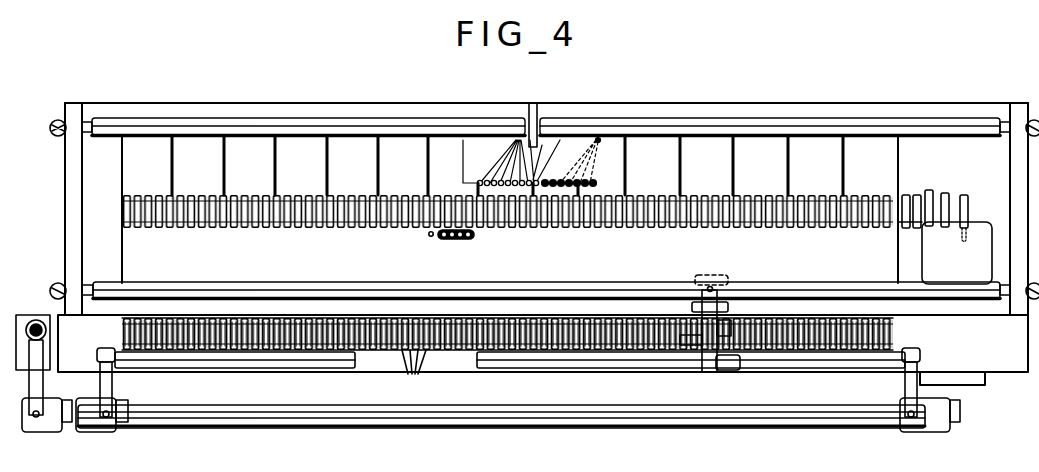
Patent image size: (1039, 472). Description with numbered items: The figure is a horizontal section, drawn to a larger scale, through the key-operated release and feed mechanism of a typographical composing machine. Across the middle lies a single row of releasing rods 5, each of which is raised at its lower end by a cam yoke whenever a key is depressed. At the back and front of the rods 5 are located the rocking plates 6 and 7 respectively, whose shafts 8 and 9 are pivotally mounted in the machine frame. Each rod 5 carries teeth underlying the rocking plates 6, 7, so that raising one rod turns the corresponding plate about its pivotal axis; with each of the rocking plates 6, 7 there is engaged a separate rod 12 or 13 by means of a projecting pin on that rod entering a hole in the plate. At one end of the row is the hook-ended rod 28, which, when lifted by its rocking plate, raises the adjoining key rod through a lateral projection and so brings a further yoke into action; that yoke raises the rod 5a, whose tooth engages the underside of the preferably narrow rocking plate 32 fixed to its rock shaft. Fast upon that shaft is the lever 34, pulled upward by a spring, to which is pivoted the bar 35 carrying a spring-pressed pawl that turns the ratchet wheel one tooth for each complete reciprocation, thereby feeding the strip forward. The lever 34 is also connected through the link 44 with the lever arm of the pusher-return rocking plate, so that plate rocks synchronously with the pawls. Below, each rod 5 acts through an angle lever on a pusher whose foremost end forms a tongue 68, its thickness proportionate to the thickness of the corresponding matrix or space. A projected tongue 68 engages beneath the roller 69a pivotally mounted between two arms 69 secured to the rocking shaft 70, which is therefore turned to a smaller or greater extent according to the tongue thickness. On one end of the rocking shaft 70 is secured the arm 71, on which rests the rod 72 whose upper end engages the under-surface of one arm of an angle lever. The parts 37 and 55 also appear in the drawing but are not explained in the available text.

The rod 5 is at (322, 226).
The rod 5a is at (946, 197).
The rocking plate 6 is at (296, 140).
The rocking plate 7 is at (122, 247).
The shaft 8 is at (262, 124).
The shaft 9 is at (111, 283).
The rod 12 is at (556, 180).
The rod 13 is at (453, 240).
The rod 28 is at (967, 204).
The rocking plate 32 is at (971, 232).
The lever 34 is at (727, 296).
The bar 35 is at (700, 346).
The block 37 is at (728, 371).
The link 44 is at (736, 326).
The key 55 is at (930, 192).
The tongue 68 is at (412, 378).
The arms 69 is at (112, 387).
The roller 69a is at (843, 376).
The rocking shaft 70 is at (240, 436).
The arm 71 is at (32, 386).
The rod 72 is at (36, 320).